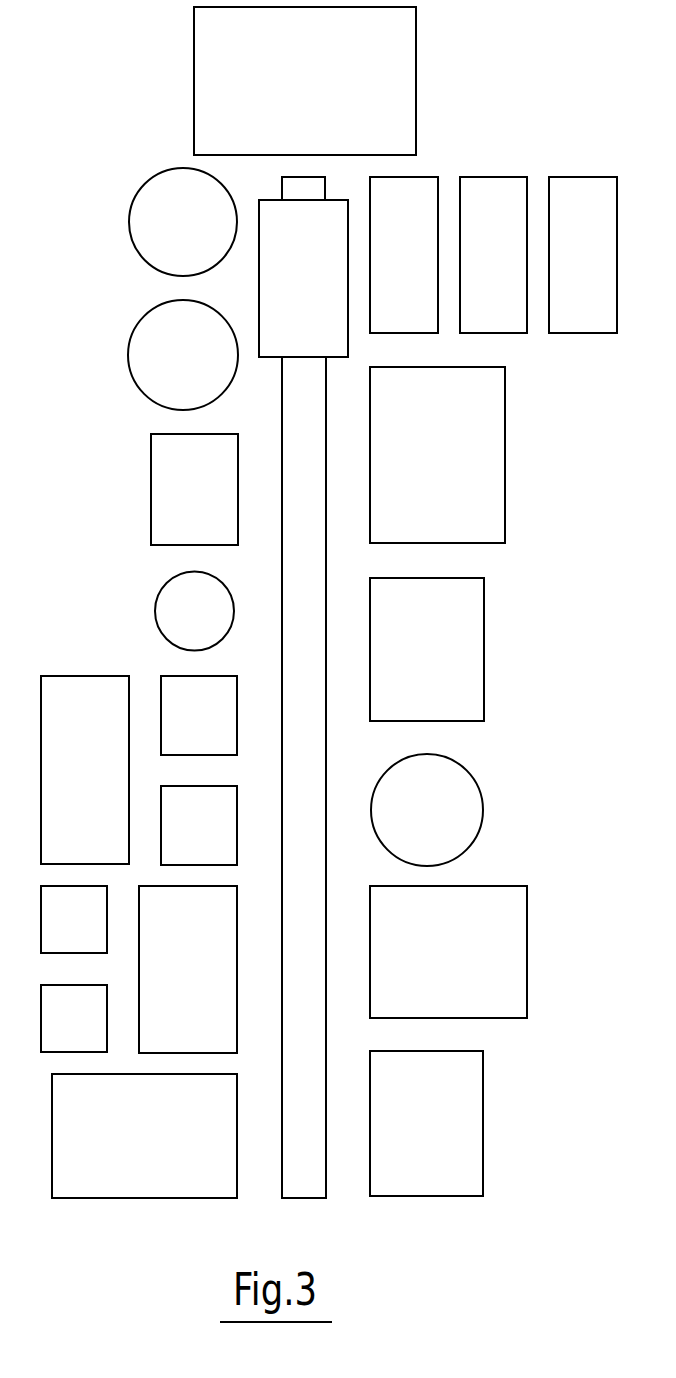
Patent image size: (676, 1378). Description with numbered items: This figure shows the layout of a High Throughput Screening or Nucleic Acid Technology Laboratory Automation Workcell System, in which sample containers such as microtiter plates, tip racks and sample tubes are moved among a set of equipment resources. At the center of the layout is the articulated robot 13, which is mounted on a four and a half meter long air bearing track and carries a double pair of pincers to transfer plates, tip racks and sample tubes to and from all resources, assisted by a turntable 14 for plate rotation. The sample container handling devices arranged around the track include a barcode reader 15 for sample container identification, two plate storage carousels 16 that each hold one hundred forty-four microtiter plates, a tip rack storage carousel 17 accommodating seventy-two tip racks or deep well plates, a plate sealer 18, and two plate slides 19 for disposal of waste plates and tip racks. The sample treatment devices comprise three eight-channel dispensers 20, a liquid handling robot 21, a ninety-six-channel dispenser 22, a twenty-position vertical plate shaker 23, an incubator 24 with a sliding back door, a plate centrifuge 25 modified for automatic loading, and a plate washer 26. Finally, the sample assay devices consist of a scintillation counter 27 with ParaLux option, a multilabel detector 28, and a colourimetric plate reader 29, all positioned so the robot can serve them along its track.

The articulated robot 13 is at (323, 284).
The turntable 14 is at (171, 620).
The barcode reader 15 is at (173, 497).
The plate storage carousel 16 is at (164, 235).
The tip rack storage carousel 17 is at (406, 822).
The plate sealer 18 is at (399, 1134).
The plate slide 19 is at (53, 931).
The 8-channel dispenser 20 is at (422, 256).
The liquid handling robot 21 is at (416, 466).
The 96-channel dispenser 22 is at (466, 959).
The vertical plate shaker 23 is at (404, 668).
The incubator 24 is at (157, 1143).
The plate centrifuge 25 is at (272, 95).
The plate washer 26 is at (218, 834).
The scintillation counter 27 is at (167, 977).
The multilabel detector 28 is at (59, 780).
The colourimetric plate reader 29 is at (174, 726).